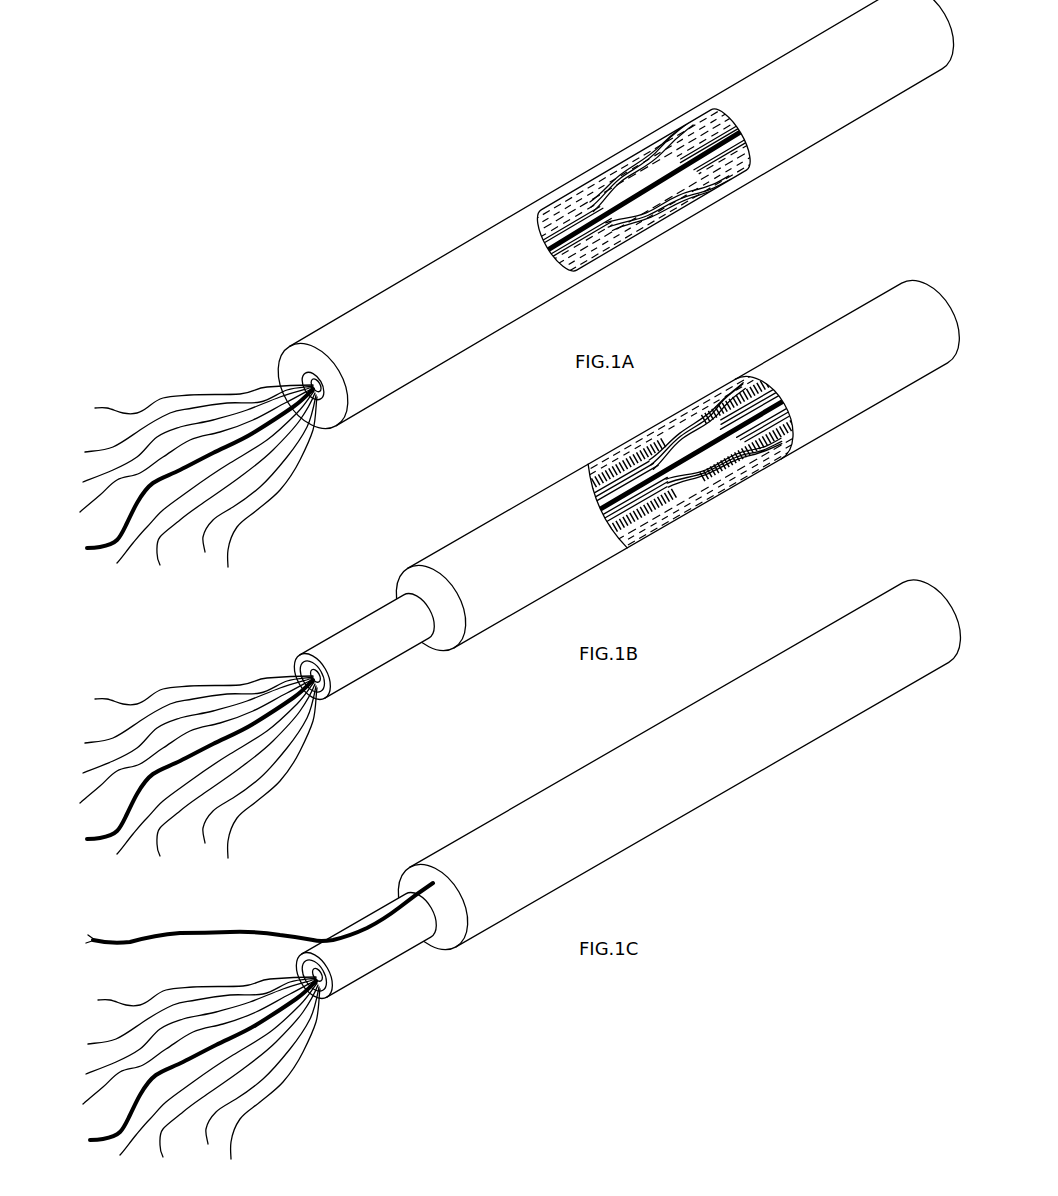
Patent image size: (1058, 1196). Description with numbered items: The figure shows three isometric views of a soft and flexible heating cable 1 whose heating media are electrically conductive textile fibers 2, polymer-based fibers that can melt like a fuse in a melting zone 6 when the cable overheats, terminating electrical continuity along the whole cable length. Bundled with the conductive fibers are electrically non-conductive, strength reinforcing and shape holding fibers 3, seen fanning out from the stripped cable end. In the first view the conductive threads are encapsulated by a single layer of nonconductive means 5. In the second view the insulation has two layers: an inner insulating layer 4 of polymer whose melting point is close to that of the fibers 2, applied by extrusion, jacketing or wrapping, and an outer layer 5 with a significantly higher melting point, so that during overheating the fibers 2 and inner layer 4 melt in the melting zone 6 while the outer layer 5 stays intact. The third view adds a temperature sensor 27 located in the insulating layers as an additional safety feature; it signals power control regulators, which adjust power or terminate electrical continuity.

In FIG. 1A, the heating cable 1 is at (377, 292).
In FIG. 1B, the heating cable 1 is at (498, 514).
In FIG. 1C, the heating cable 1 is at (691, 814).
In FIG. 1A, the electrically conductive textile fibers 2 is at (237, 393).
In FIG. 1B, the electrically conductive textile fibers 2 is at (260, 670).
In FIG. 1C, the electrically conductive textile fibers 2 is at (321, 1040).
In FIG. 1A, the strength reinforcing and shape holding fibers 3 is at (163, 470).
In FIG. 1B, the strength reinforcing and shape holding fibers 3 is at (170, 757).
In FIG. 1C, the strength reinforcing and shape holding fibers 3 is at (243, 1033).
In FIG. 1B, the inner insulating layer 4 is at (353, 625).
In FIG. 1C, the inner insulating layer 4 is at (366, 945).
In FIG. 1A, the nonconductive means 5 is at (704, 121).
In FIG. 1B, the nonconductive means 5 is at (704, 401).
In FIG. 1A, the melting zone 6 is at (643, 174).
In FIG. 1B, the melting zone 6 is at (706, 465).
In FIG. 1C, the temperature sensor 27 is at (281, 930).